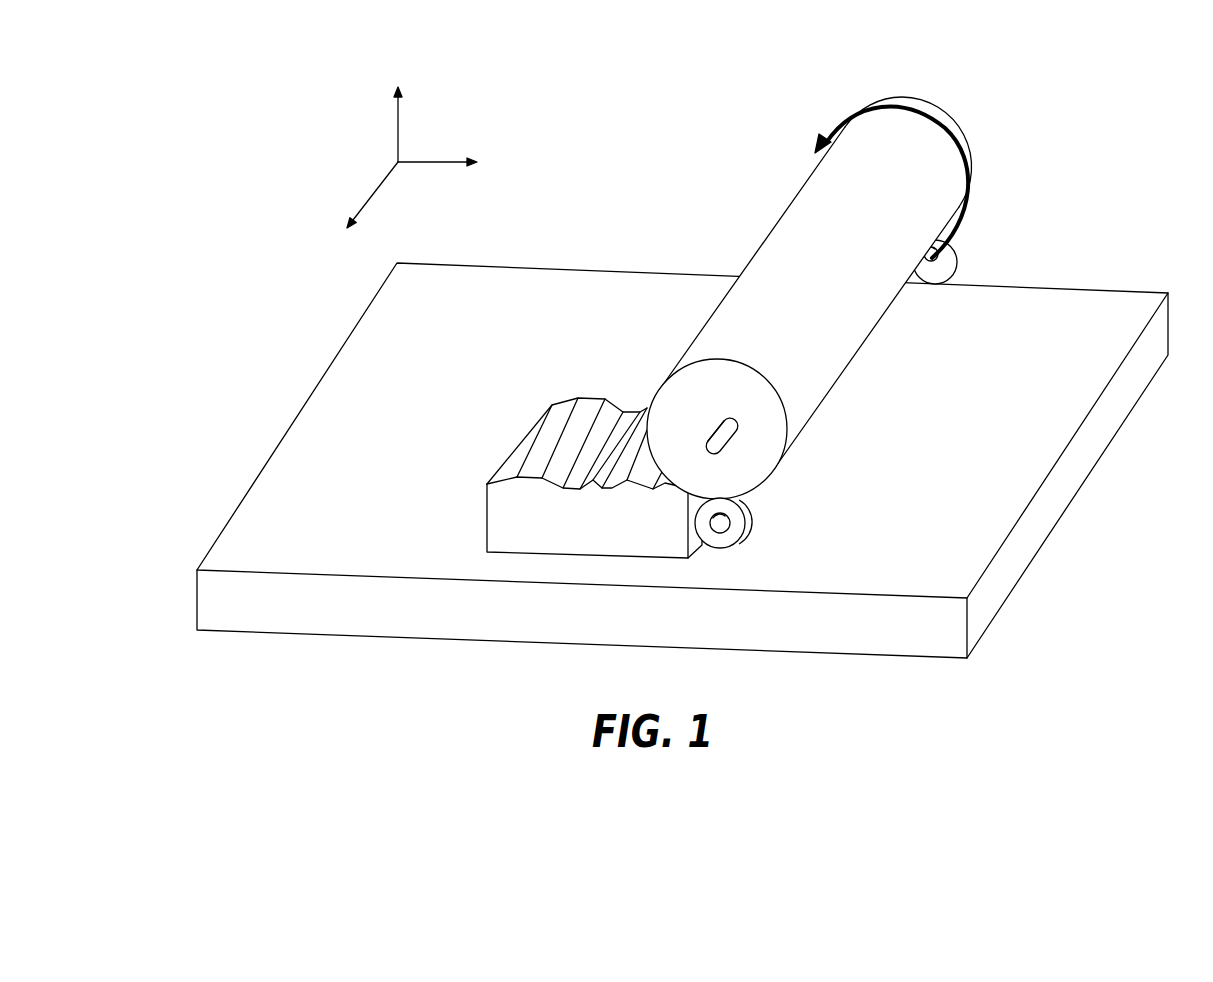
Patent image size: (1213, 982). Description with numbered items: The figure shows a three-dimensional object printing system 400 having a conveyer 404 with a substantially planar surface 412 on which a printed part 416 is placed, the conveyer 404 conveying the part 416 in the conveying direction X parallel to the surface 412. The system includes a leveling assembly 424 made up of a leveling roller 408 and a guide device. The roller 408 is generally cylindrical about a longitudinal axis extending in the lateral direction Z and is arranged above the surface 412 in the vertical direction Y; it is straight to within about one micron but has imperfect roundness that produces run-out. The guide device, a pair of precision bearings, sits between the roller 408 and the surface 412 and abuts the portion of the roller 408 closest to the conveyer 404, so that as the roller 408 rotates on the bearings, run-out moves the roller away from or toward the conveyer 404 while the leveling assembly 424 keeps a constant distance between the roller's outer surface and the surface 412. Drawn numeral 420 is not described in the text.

The three-dimensional object printing system 400 is at (682, 375).
The conveyer 404 is at (682, 462).
The leveling roller 408 is at (785, 237).
The surface 412 is at (553, 290).
The part 416 is at (563, 457).
The irregular upper surface of part 420 is at (617, 405).
The leveling assembly 424 is at (782, 151).